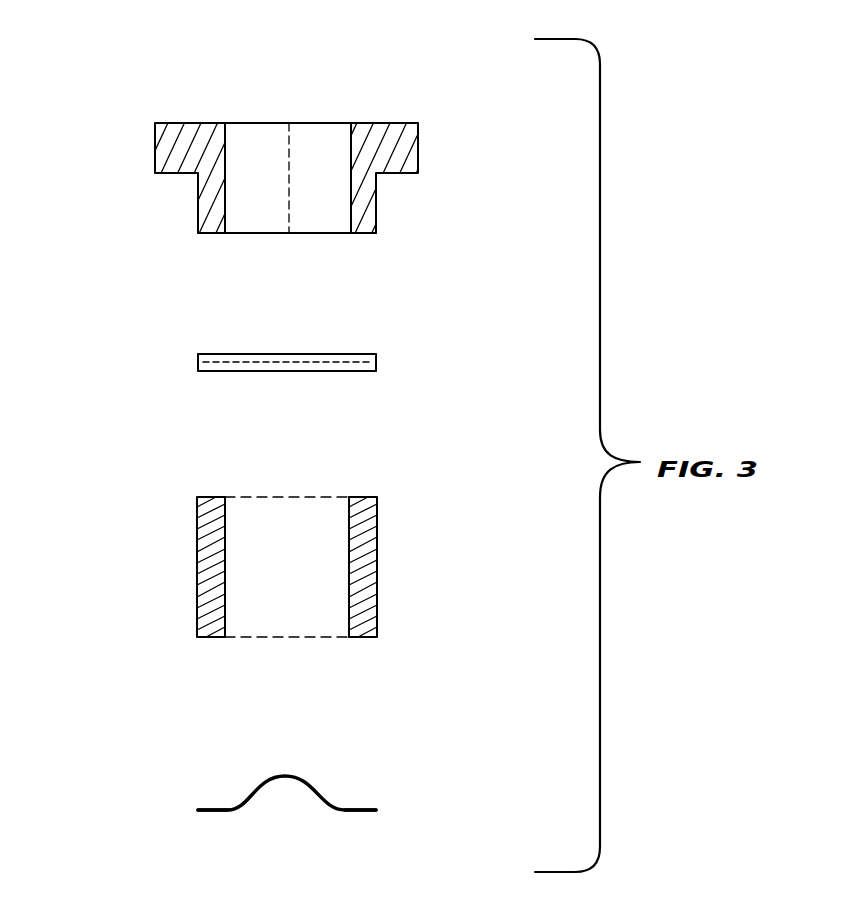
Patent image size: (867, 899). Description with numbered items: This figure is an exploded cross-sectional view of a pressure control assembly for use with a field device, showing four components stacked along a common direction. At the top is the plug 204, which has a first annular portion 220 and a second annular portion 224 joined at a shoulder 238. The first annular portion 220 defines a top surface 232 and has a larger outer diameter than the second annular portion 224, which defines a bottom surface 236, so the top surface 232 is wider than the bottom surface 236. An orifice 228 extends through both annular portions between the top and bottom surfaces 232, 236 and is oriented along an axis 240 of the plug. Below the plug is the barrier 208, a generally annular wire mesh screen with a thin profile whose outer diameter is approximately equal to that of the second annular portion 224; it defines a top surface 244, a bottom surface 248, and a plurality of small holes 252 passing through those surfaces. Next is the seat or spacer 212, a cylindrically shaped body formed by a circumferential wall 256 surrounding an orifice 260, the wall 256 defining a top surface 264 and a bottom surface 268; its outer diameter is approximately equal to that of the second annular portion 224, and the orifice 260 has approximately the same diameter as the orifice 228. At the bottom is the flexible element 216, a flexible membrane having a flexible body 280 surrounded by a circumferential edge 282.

The plug 204 is at (457, 148).
The barrier 208 is at (197, 359).
The seat or spacer 212 is at (186, 556).
The flexible element 216 is at (364, 783).
The first annular portion 220 is at (155, 146).
The second annular portion 224 is at (198, 200).
The orifice 228 is at (350, 157).
The top surface 232 is at (398, 122).
The bottom surface 236 is at (361, 234).
The shoulder 238 is at (377, 178).
The axis 240 is at (288, 198).
The top surface 244 is at (350, 354).
The bottom surface 248 is at (350, 371).
The holes 252 is at (243, 363).
The circumferential wall 256 is at (378, 563).
The orifice 260 is at (350, 610).
The top surface 264 is at (328, 495).
The bottom surface 268 is at (259, 644).
The flexible body 280 is at (276, 792).
The circumferential edge 282 is at (211, 816).